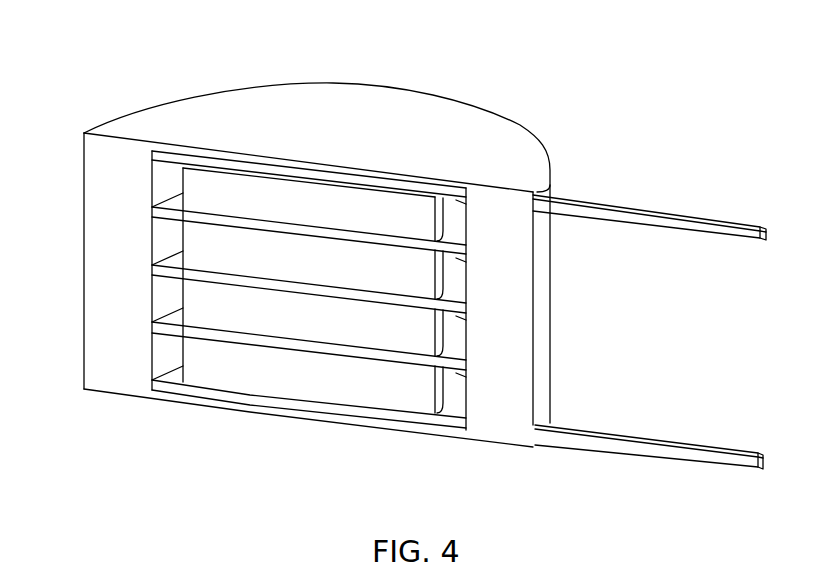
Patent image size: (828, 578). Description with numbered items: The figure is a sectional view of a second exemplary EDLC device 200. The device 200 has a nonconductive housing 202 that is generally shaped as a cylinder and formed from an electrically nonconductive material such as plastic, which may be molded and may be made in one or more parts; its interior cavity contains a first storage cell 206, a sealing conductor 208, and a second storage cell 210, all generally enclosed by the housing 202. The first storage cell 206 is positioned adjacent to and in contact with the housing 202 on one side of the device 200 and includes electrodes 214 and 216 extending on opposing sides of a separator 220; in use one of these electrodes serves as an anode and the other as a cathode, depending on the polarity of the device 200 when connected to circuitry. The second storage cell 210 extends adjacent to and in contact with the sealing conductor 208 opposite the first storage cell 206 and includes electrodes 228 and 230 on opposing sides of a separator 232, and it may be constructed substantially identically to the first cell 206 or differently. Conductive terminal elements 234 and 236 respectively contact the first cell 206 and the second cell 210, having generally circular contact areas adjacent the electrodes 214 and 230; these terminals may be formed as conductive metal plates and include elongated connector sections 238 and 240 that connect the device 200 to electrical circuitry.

The EDLC device 200 is at (532, 65).
The nonconductive housing 202 is at (540, 322).
The first storage cell 206 is at (148, 350).
The sealing conductor 208 is at (148, 268).
The second storage cell 210 is at (148, 190).
The electrode 214 is at (233, 367).
The electrode 216 is at (388, 333).
The separator 220 is at (308, 347).
The electrode 228 is at (273, 253).
The electrode 230 is at (358, 212).
The separator 232 is at (320, 235).
The conductive terminal element 234 is at (452, 422).
The conductive terminal element 236 is at (400, 190).
The elongated connector section 238 is at (702, 445).
The elongated connector section 240 is at (702, 212).